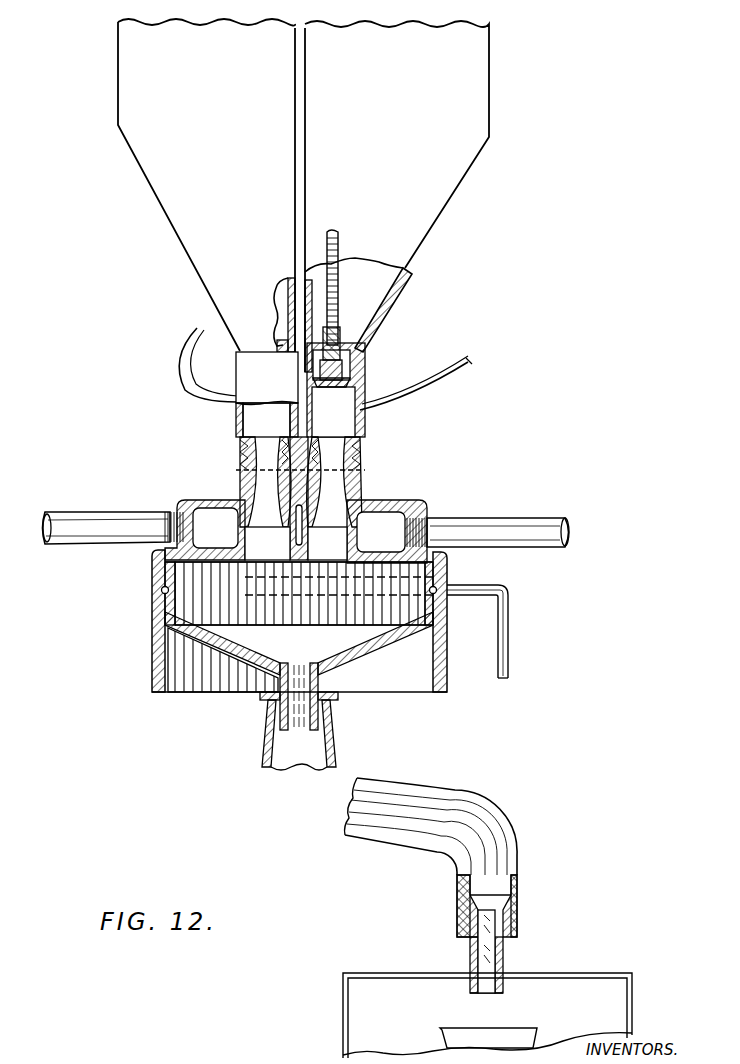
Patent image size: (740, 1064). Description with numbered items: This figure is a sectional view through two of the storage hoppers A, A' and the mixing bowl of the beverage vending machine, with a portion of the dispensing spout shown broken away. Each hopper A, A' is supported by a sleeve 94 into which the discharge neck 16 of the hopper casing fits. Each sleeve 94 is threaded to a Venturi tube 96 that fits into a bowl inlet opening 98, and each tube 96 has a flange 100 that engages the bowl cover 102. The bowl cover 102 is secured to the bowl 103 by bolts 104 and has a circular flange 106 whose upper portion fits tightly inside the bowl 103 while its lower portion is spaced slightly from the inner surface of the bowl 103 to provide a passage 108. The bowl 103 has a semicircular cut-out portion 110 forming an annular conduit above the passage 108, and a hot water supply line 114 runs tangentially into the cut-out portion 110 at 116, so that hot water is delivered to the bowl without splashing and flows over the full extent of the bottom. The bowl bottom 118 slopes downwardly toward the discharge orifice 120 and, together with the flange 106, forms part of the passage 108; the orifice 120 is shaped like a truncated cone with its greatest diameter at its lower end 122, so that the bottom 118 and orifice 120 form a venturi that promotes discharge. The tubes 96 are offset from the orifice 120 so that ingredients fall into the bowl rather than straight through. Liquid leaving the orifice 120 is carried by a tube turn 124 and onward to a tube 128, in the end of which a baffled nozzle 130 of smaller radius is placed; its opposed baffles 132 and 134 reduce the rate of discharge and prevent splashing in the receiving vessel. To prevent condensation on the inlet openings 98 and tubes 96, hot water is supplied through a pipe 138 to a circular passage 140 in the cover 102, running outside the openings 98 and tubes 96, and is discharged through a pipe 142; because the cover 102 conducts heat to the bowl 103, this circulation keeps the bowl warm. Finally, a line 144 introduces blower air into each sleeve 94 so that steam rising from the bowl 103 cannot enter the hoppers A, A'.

The hopper A is at (397, 196).
The hopper A' is at (206, 185).
The discharge neck 16 is at (365, 372).
The sleeve 94 is at (236, 422).
The Venturi tube 96 is at (240, 481).
The bowl inlet opening 98 is at (327, 512).
The flange 100 is at (365, 500).
The bowl cover 102 is at (427, 506).
The bowl 103 is at (152, 645).
The bolts 104 is at (165, 548).
The circular flange 106 is at (430, 585).
The passage 108 is at (162, 611).
The semicircular cut-out portion 110 is at (160, 590).
The hot water supply line 114 is at (509, 631).
The tangential entry point 116 is at (286, 583).
The bowl bottom 118 is at (268, 660).
The discharge orifice 120 is at (312, 664).
The lower end 122 is at (268, 738).
The tube turn 124 is at (335, 740).
The tube 128 is at (514, 840).
The baffled nozzle 130 is at (503, 958).
The baffle 132 is at (482, 961).
The baffle 134 is at (517, 926).
The pipe 138 is at (546, 518).
The passage 140 is at (186, 500).
The pipe 142 is at (120, 512).
The line 144 is at (186, 362).